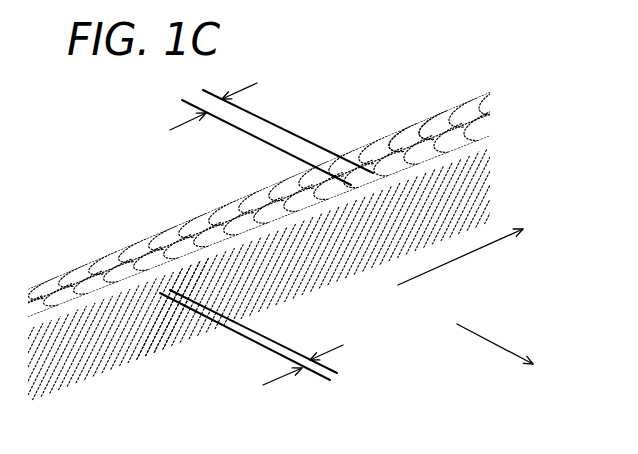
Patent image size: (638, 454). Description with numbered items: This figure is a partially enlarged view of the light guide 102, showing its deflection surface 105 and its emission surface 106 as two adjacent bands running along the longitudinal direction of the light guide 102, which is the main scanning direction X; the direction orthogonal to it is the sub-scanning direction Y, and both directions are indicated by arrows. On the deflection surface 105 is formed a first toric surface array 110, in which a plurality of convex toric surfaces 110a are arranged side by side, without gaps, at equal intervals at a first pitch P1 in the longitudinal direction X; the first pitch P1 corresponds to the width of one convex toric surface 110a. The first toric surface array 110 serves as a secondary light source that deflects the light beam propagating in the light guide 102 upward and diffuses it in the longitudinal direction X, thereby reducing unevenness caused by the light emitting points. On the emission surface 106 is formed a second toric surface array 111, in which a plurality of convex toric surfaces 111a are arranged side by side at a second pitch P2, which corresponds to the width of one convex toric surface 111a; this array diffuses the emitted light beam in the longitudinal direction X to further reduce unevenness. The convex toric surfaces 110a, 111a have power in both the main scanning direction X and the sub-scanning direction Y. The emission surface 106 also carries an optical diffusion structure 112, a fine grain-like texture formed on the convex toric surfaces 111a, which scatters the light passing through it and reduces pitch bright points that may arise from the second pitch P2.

The light guide 102 is at (297, 245).
The deflection surface 105 is at (259, 290).
The emission surface 106 is at (268, 189).
The first toric surface array 110 is at (259, 290).
The convex toric surface 110a is at (157, 342).
The second toric surface array 111 is at (268, 189).
The optical diffusion structure 112 is at (268, 201).
The convex toric surface 111a is at (403, 130).
The first pitch P1 is at (251, 337).
The second pitch P2 is at (271, 123).
The main scanning direction X is at (460, 257).
The sub-scanning direction Y is at (495, 344).